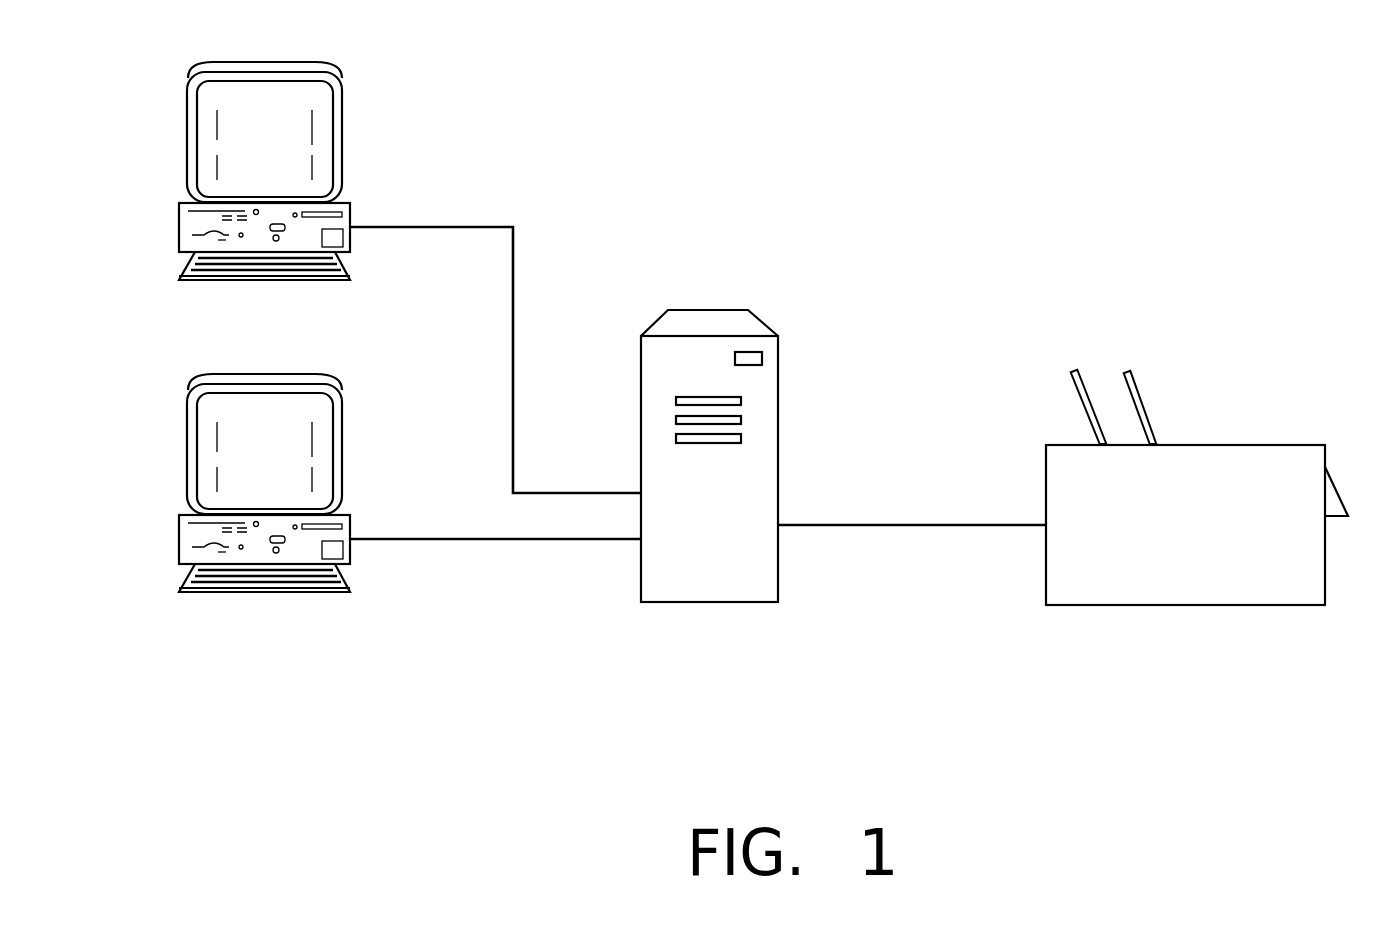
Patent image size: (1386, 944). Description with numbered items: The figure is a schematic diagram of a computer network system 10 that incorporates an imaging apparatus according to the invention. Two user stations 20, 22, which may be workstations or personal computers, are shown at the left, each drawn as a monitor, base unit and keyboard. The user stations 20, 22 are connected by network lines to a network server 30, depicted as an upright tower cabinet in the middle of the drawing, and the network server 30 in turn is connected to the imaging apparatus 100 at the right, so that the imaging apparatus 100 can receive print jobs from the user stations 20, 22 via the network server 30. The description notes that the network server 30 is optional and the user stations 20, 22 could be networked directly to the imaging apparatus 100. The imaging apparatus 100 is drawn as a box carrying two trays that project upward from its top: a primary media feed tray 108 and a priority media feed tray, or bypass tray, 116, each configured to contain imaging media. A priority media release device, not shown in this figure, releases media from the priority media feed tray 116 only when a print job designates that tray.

The computer network system 10 is at (1202, 98).
The user station 20 is at (190, 135).
The user station 22 is at (190, 447).
The network server 30 is at (712, 318).
The imaging apparatus 100 is at (1262, 424).
The primary media feed tray 108 is at (1072, 369).
The priority media feed tray 116 is at (1131, 381).